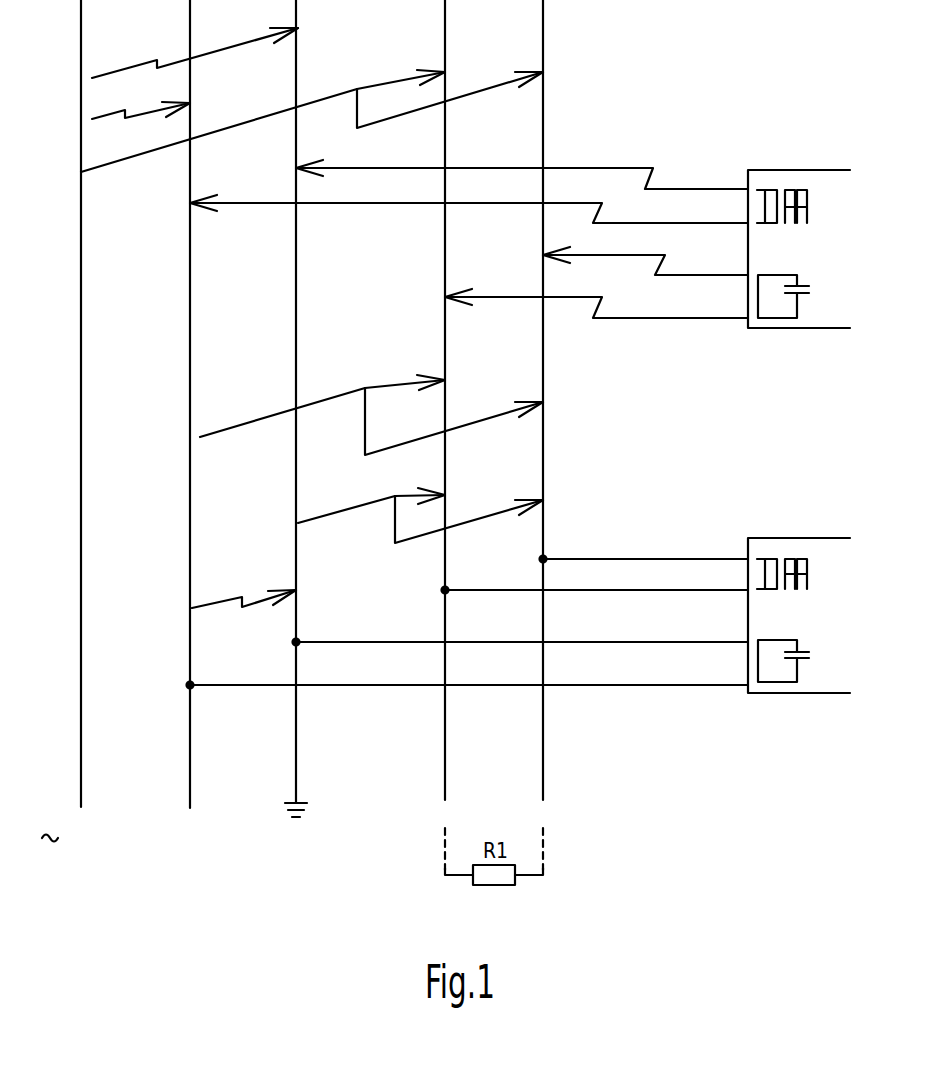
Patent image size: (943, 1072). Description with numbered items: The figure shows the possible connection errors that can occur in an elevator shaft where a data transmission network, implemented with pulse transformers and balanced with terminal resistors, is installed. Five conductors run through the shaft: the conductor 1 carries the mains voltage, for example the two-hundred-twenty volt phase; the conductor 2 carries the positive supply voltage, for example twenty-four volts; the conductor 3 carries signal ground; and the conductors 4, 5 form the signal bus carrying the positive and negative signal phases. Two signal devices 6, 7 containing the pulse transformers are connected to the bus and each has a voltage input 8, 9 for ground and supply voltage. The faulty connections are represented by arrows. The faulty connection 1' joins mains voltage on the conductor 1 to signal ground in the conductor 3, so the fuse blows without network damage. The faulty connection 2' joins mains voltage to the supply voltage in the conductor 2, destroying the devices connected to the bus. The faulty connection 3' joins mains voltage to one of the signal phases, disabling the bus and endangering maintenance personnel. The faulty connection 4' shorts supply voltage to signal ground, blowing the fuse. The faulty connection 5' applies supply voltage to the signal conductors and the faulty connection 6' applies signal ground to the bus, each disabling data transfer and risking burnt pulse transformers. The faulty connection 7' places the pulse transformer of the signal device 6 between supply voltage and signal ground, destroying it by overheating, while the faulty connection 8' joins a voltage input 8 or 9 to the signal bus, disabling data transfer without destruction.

The conductor 1 is at (82, 426).
The conductor 2 is at (200, 426).
The conductor 3 is at (307, 426).
The conductor 4 is at (448, 437).
The conductor 5 is at (552, 437).
The signal device 6 is at (799, 215).
The signal device 7 is at (799, 579).
The voltage input 8 is at (793, 285).
The voltage input 9 is at (758, 660).
The faulty connection 1' is at (195, 53).
The faulty connection 2' is at (141, 95).
The faulty connection 3' is at (312, 121).
The faulty connection 4' is at (244, 584).
The faulty connection 5' is at (371, 402).
The faulty connection 6' is at (420, 507).
The faulty connection 7' is at (469, 191).
The faulty connection 8' is at (596, 282).